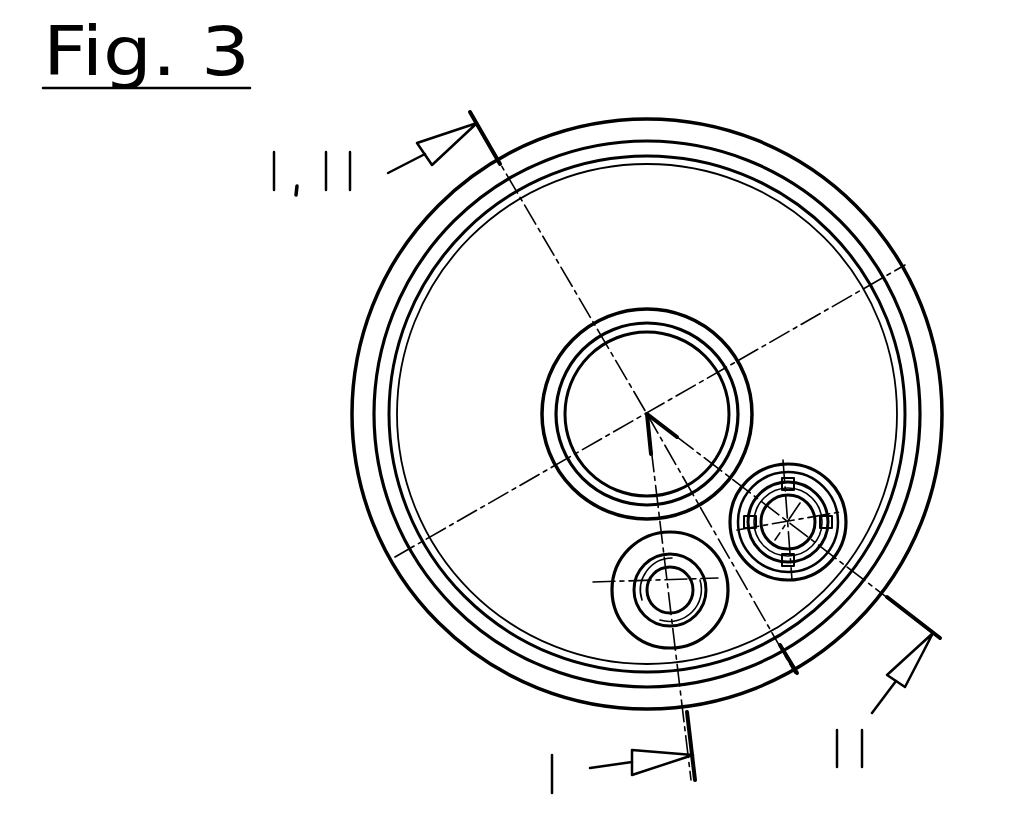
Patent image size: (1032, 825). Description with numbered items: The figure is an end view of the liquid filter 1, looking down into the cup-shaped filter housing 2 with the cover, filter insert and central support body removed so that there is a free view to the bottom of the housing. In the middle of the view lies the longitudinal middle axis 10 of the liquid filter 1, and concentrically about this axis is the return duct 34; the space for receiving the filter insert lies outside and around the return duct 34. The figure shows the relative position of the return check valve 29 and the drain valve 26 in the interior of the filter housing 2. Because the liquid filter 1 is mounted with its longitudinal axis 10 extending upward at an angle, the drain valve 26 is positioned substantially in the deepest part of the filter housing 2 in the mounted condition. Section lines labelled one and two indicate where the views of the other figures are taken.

The liquid filter 1 is at (313, 309).
The filter housing 2 is at (367, 505).
The longitudinal middle axis 10 is at (642, 413).
The return duct 34 is at (658, 360).
The drain valve 26 is at (622, 604).
The return check valve 29 is at (835, 483).